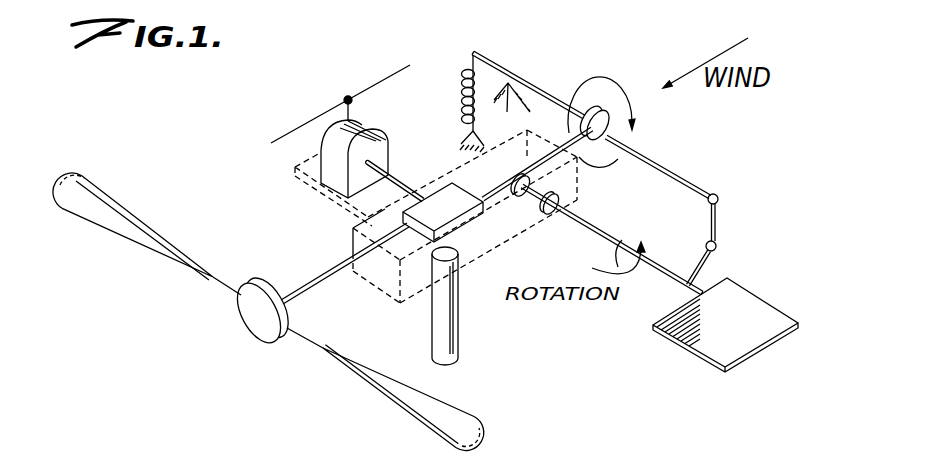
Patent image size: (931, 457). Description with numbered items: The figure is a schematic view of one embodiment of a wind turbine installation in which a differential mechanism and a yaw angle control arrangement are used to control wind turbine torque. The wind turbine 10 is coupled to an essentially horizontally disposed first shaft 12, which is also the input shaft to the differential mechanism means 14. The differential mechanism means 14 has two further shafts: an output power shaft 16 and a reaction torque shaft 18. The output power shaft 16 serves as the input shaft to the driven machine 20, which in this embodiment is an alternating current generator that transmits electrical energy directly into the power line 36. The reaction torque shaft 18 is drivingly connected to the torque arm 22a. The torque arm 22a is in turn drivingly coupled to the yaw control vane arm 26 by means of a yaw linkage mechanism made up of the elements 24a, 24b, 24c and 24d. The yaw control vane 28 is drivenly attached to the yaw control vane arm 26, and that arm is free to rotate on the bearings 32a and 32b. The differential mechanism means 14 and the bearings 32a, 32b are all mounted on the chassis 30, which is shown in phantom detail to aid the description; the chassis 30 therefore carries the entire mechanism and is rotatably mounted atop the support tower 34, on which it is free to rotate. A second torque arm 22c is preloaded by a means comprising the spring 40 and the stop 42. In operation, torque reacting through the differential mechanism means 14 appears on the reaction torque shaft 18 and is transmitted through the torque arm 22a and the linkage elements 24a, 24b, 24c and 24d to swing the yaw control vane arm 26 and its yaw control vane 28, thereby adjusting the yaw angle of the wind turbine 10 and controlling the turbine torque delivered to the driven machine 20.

The wind turbine 10 is at (430, 421).
The first shaft 12 is at (327, 288).
The differential mechanism means 14 is at (402, 196).
The output power shaft 16 is at (405, 200).
The reaction torque shaft 18 is at (497, 180).
The driven machine 20 is at (353, 122).
The torque arm 22a is at (656, 162).
The torque arm 22c is at (528, 82).
The yaw linkage mechanism element 24a is at (718, 195).
The yaw linkage mechanism element 24b is at (717, 218).
The yaw linkage mechanism element 24c is at (717, 247).
The yaw linkage mechanism element 24d is at (707, 268).
The yaw control vane arm 26 is at (615, 250).
The yaw control vane 28 is at (772, 318).
The chassis 30 is at (346, 205).
The bearing 32a is at (550, 215).
The bearing 32b is at (520, 198).
The support tower 34 is at (458, 347).
The power line 36 is at (318, 117).
The spring 40 is at (462, 80).
The stop 42 is at (508, 110).